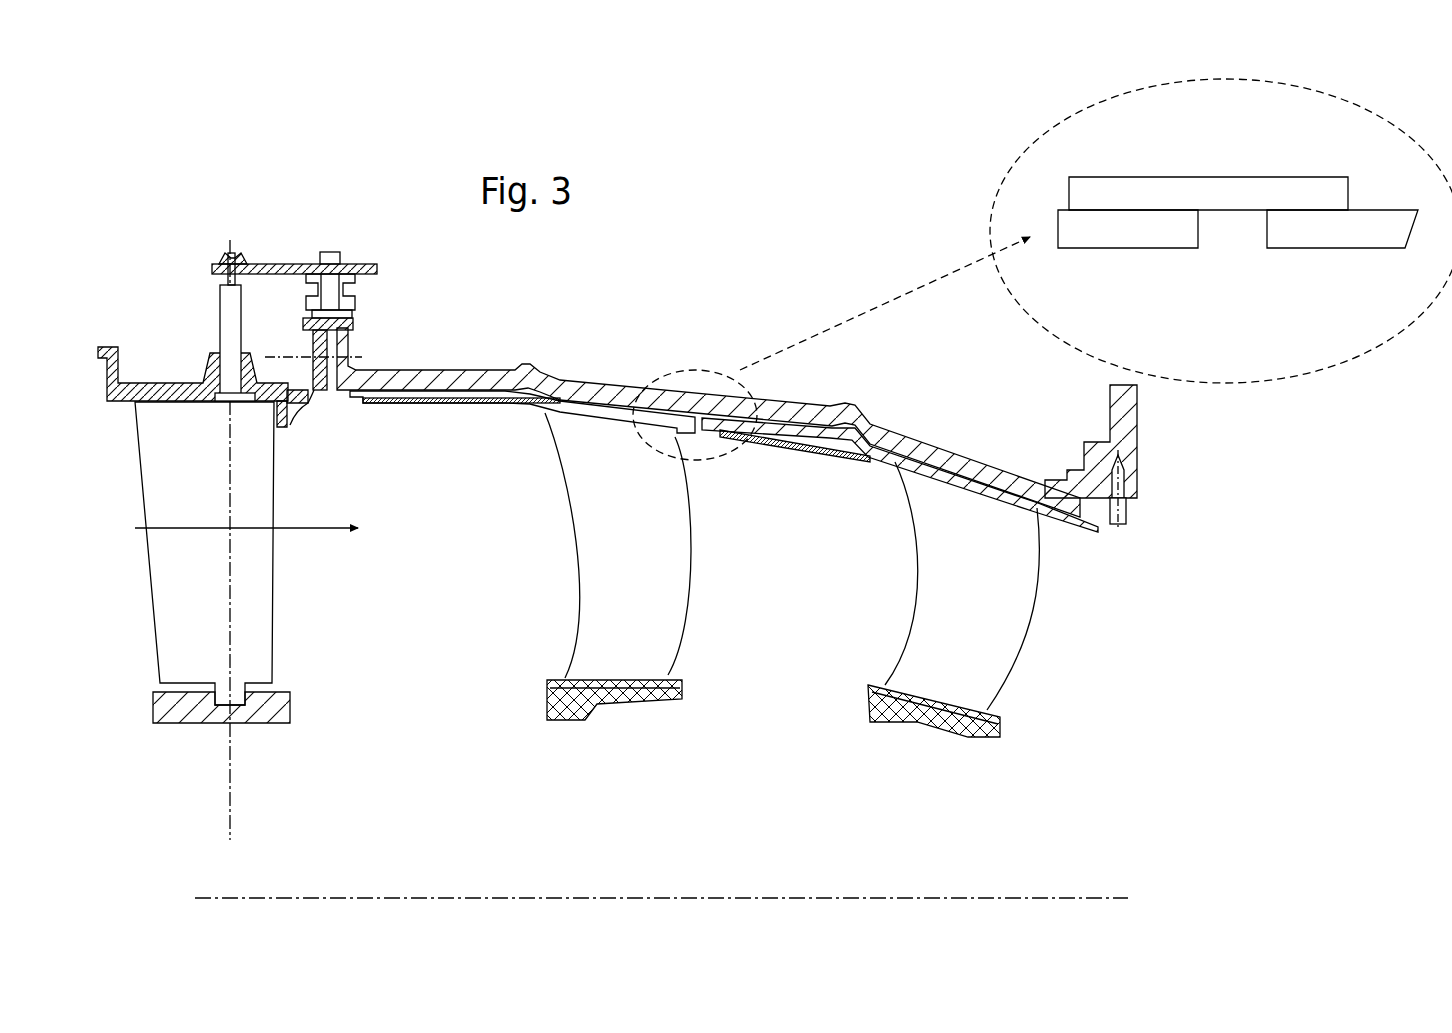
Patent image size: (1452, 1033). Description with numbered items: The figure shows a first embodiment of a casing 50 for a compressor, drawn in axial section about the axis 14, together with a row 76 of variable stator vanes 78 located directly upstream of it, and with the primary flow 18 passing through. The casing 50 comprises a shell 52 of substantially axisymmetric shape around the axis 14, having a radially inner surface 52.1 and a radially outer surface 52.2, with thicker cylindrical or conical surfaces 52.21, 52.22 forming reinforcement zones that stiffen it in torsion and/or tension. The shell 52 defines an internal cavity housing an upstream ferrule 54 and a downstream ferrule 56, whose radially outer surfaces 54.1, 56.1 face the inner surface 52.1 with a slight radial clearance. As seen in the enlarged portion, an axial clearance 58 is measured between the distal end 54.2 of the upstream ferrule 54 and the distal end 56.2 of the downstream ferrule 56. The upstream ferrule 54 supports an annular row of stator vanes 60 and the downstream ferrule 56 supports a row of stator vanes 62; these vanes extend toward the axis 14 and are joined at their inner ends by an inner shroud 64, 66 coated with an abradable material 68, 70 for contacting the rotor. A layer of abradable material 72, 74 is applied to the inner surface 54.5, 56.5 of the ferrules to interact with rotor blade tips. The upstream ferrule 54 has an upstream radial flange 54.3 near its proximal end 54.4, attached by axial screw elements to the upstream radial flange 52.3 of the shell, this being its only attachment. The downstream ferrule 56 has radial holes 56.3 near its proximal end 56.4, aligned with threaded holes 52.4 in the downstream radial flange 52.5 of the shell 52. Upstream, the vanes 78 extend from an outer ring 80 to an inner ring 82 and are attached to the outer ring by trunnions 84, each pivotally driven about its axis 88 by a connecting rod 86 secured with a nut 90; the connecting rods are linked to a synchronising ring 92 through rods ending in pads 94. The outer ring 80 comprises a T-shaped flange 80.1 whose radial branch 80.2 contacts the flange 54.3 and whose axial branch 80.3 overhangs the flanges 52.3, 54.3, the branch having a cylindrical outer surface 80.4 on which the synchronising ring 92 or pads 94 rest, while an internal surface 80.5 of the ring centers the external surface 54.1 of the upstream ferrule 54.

The axis 14 is at (585, 895).
The primary flow 18 is at (246, 544).
The casing 50 is at (862, 252).
The shell 52 is at (940, 460).
The radially inner surface 52.1 is at (1068, 287).
The radially outer surface 52.2 is at (556, 378).
The cylindrical or conical surface 52.21 is at (527, 368).
The cylindrical or conical surface 52.22 is at (855, 410).
The upstream radial flange 52.3 is at (355, 348).
The threaded holes 52.4 is at (1100, 463).
The downstream radial flange 52.5 is at (1115, 418).
The upstream ferrule 54 is at (498, 422).
The radially outer surface 54.1 is at (1122, 310).
The distal end 54.2 is at (1200, 252).
The upstream radial flange 54.3 is at (320, 393).
The proximal end 54.4 is at (302, 450).
The inner surface 54.5 is at (505, 418).
The downstream ferrule 56 is at (918, 511).
The radially outer surface 56.1 is at (1328, 136).
The distal end 56.2 is at (1268, 252).
The radial holes 56.3 is at (1110, 515).
The proximal end 56.4 is at (1135, 538).
The internal surface 56.5 is at (856, 462).
The axial clearance 58 is at (700, 438).
The stator vanes 60 is at (618, 586).
The stator vanes 62 is at (953, 617).
The inner shroud 64 is at (613, 697).
The inner shroud 66 is at (940, 710).
The abradable material 68 is at (625, 700).
The abradable material 70 is at (937, 718).
The layer of abradable material 72 is at (437, 405).
The layer of abradable material 74 is at (834, 452).
The row of variable stator vanes 76 is at (248, 540).
The variable stator vanes 78 is at (204, 553).
The outer ring 80 is at (205, 353).
The T-shaped flange 80.1 is at (292, 348).
The radial branch 80.2 is at (313, 366).
The axial branch 80.3 is at (351, 330).
The cylindrical outer surface 80.4 is at (303, 320).
The internal surface 80.5 is at (288, 422).
The inner ring 82 is at (262, 708).
The trunnion 84 is at (220, 303).
The connecting rod 86 is at (258, 264).
The axis 88 is at (228, 491).
The nut 90 is at (220, 262).
The synchronising ring 92 is at (345, 286).
The pads 94 is at (340, 316).